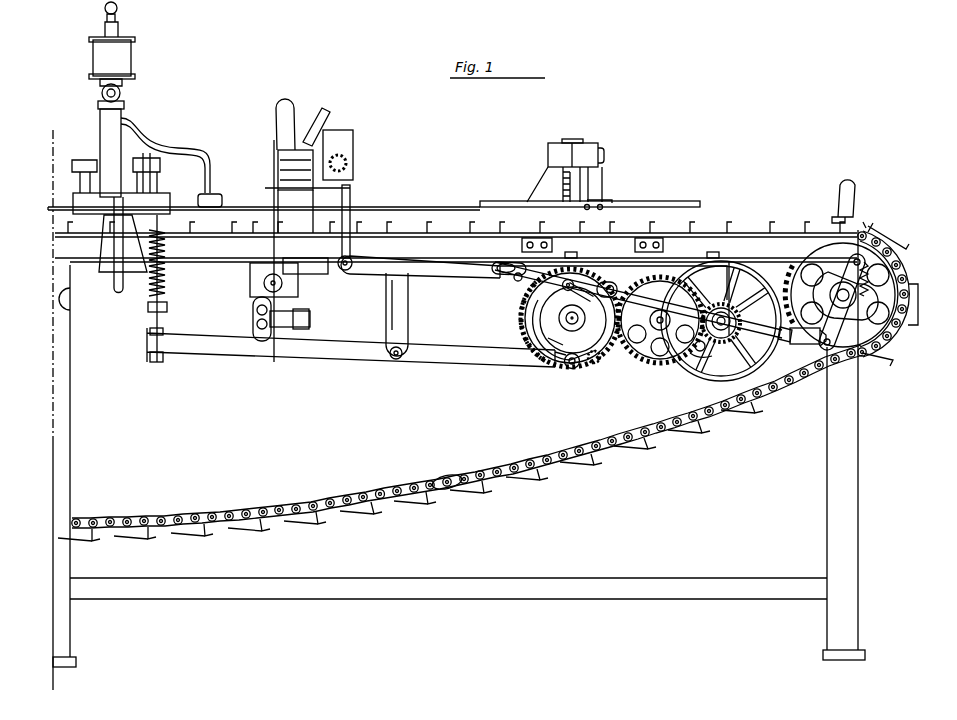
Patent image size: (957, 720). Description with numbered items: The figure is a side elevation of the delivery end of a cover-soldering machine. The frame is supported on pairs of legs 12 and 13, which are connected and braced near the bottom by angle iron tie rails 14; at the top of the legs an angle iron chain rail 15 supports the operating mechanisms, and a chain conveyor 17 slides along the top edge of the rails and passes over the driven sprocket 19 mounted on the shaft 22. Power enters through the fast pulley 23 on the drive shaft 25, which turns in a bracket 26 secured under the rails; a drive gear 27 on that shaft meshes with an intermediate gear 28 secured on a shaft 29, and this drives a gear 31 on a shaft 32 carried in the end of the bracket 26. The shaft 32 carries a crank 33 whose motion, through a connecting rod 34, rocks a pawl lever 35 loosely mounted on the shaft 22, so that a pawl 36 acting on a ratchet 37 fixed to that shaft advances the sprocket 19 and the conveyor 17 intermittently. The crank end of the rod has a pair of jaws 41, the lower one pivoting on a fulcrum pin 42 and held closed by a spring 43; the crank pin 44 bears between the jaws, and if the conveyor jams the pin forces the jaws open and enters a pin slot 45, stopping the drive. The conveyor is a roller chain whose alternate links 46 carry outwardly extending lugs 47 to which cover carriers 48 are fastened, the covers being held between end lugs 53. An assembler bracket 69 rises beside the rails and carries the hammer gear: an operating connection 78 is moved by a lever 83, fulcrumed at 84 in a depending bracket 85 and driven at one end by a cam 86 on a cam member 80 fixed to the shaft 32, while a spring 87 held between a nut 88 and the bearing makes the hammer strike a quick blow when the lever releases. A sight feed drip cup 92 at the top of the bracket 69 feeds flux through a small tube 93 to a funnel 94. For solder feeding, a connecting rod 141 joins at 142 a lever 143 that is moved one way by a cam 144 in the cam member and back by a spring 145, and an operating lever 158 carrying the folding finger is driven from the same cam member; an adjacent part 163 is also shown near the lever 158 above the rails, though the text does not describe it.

The leg 12 is at (70, 442).
The leg 13 is at (858, 445).
The angle iron tie rail 14 is at (493, 578).
The angle iron chain rail 15 is at (784, 244).
The chain conveyor 17 is at (543, 460).
The sprocket 19 is at (887, 288).
The shaft 22 is at (880, 324).
The fast pulley 23 is at (698, 369).
The drive shaft 25 is at (714, 312).
The bracket 26 is at (686, 266).
The drive gear 27 is at (738, 309).
The intermediate gear 28 is at (660, 368).
The shaft 29 is at (686, 358).
The gear 31 is at (588, 363).
The shaft 32 is at (586, 320).
The crank 33 is at (522, 304).
The connecting rod 34 is at (650, 311).
The pawl lever 35 is at (838, 348).
The pawl 36 is at (886, 252).
The ratchet 37 is at (878, 303).
The jaws 41 is at (506, 263).
The fulcrum pin 42 is at (611, 285).
The spring 43 is at (629, 300).
The crank pin 44 is at (573, 281).
The pin slot 45 is at (515, 281).
The alternate link 46 is at (384, 491).
The lug 47 is at (446, 477).
The cover carrier 48 is at (80, 214).
The end lug 53 is at (66, 230).
The bracket 69 is at (131, 268).
The operating connection 78 is at (166, 289).
The cam member 80 is at (552, 340).
The lever 83 is at (231, 348).
The fulcrum 84 is at (393, 360).
The bracket 85 is at (387, 312).
The cam 86 is at (564, 367).
The spring 87 is at (149, 298).
The nut 88 is at (167, 308).
The sight feed drip cup 92 is at (131, 57).
The tube 93 is at (183, 152).
The funnel 94 is at (217, 194).
The connecting rod 141 is at (350, 201).
The connection 142 is at (342, 270).
The lever 143 is at (427, 277).
The cam 144 is at (700, 338).
The spring 145 is at (521, 330).
The operating lever 158 is at (596, 185).
The head block 163 is at (560, 155).